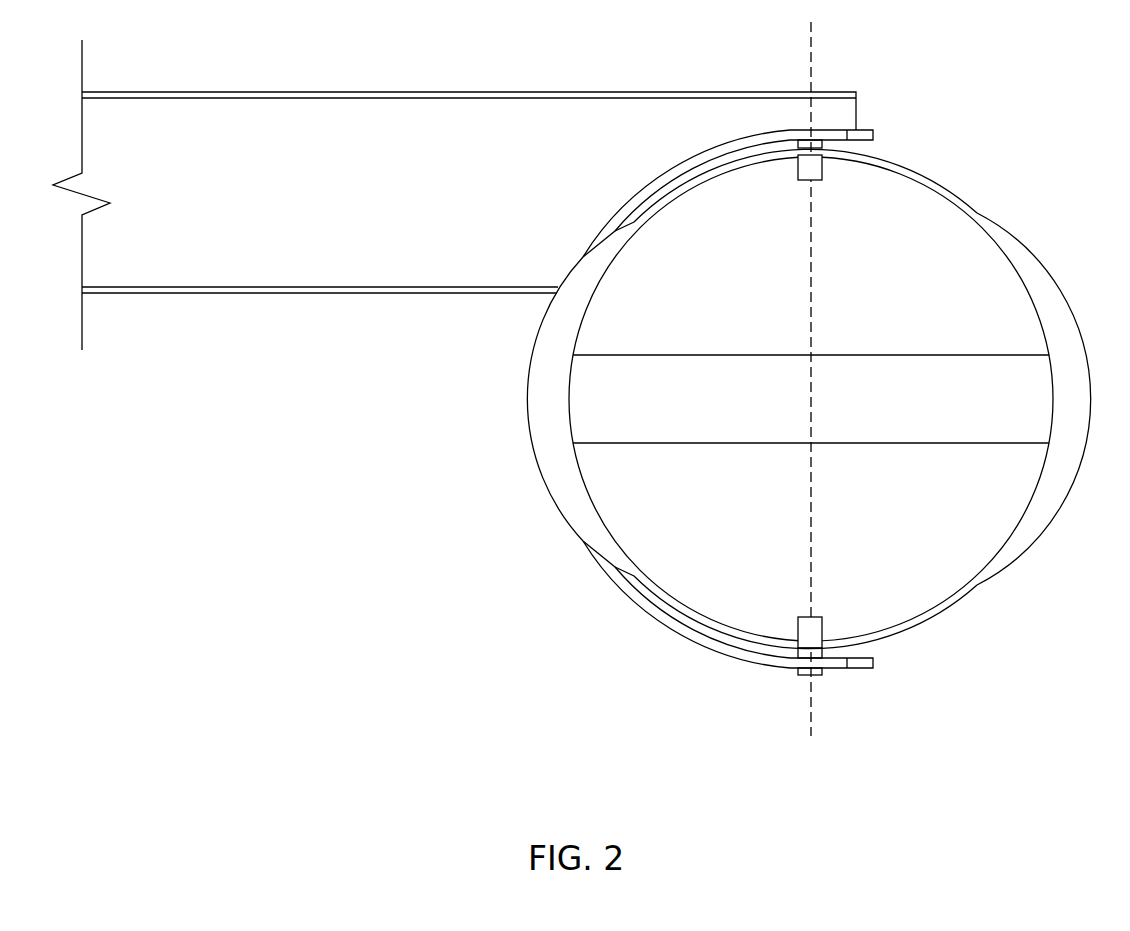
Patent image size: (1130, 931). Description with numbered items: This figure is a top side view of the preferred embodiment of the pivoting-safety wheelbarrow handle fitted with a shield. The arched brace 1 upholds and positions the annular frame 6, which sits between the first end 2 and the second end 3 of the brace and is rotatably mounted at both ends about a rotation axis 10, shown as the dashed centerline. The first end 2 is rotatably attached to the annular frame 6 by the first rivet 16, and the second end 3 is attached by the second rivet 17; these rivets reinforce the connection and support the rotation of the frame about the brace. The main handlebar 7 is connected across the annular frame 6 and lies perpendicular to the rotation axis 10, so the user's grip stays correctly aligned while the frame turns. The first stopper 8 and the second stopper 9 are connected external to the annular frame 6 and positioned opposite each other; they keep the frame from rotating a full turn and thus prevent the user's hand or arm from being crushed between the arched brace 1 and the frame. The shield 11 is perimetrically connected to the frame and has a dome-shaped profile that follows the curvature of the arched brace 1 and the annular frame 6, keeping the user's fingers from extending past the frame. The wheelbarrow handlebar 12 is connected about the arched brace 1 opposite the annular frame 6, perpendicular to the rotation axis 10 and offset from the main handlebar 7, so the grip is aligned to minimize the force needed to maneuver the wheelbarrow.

The arched brace 1 is at (578, 570).
The first end 2 is at (863, 668).
The second end 3 is at (863, 133).
The annular frame 6 is at (920, 620).
The main handlebar 7 is at (878, 425).
The first stopper 8 is at (538, 405).
The second stopper 9 is at (1068, 460).
The rotation axis 10 is at (812, 262).
The shield 11 is at (978, 556).
The wheelbarrow handlebar 12 is at (397, 105).
The first rivet 16 is at (800, 624).
The second rivet 17 is at (803, 170).